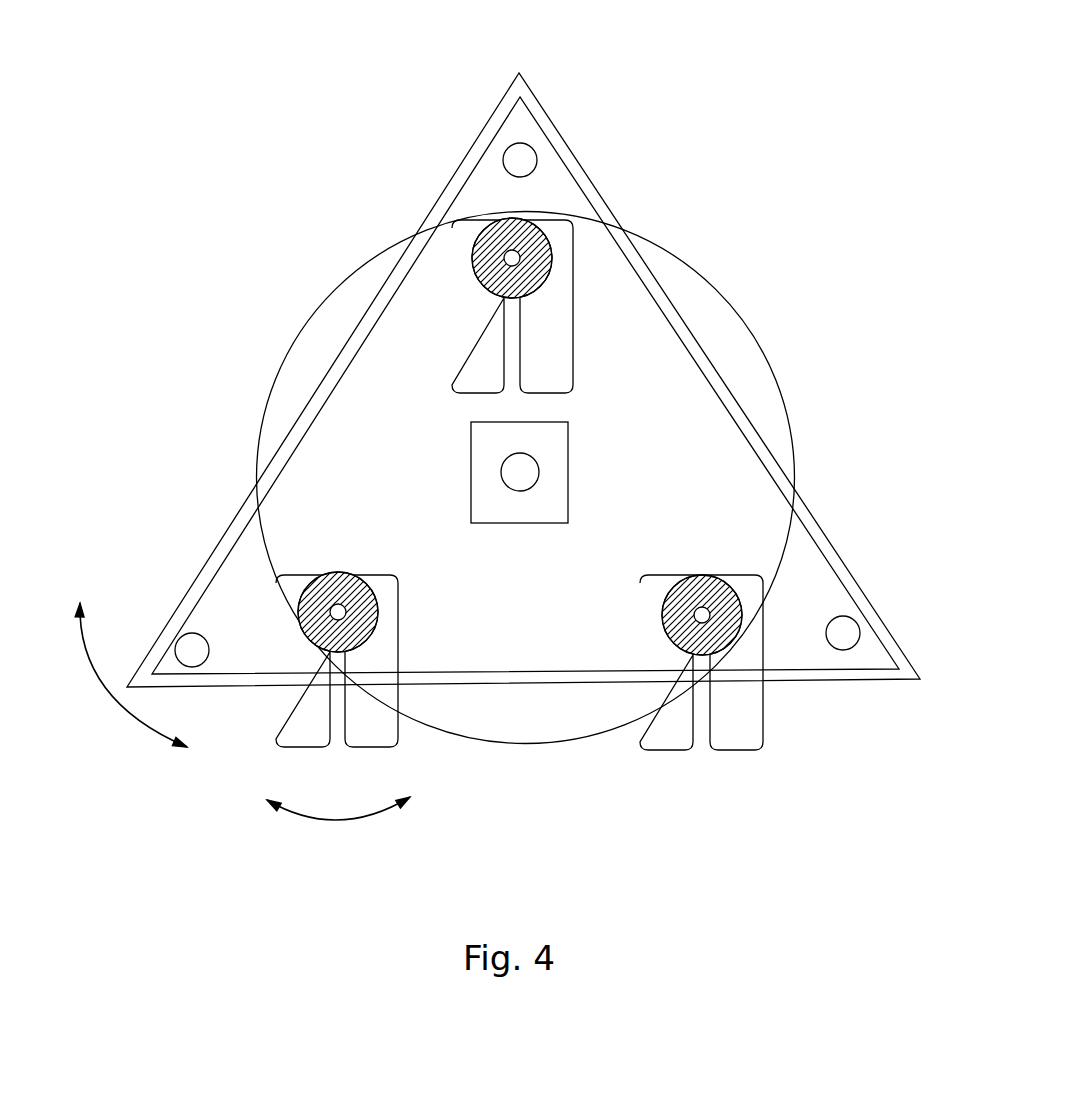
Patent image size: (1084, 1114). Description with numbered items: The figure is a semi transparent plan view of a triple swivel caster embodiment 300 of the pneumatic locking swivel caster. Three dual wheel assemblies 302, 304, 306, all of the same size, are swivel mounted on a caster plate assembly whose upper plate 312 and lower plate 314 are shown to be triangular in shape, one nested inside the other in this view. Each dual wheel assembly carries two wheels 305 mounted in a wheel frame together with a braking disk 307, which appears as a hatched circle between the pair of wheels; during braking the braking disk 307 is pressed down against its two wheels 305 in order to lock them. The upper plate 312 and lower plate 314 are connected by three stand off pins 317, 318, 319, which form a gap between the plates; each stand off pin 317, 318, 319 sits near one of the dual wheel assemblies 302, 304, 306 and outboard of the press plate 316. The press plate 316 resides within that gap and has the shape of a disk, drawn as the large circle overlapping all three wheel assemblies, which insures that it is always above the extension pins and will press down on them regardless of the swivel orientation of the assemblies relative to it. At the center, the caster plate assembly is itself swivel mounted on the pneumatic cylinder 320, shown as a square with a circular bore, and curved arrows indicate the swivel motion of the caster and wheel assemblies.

The triple swivel caster embodiment 300 is at (497, 410).
The dual wheel assembly 302 is at (386, 676).
The dual wheel assembly 304 is at (701, 680).
The dual wheel assembly 306 is at (512, 319).
The wheels 305 is at (398, 637).
The braking disk 307 is at (380, 608).
The upper plate 312 is at (542, 127).
The lower plate 314 is at (608, 203).
The press plate 316 is at (752, 328).
The stand off pin 317 is at (543, 167).
The stand off pin 318 is at (841, 612).
The stand off pin 319 is at (190, 632).
The pneumatic cylinder 320 is at (572, 468).